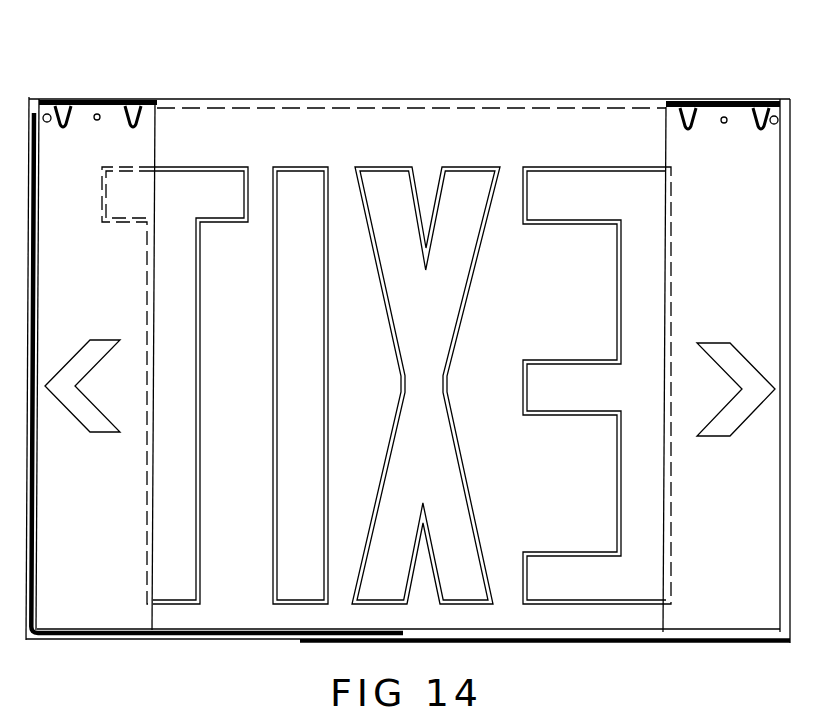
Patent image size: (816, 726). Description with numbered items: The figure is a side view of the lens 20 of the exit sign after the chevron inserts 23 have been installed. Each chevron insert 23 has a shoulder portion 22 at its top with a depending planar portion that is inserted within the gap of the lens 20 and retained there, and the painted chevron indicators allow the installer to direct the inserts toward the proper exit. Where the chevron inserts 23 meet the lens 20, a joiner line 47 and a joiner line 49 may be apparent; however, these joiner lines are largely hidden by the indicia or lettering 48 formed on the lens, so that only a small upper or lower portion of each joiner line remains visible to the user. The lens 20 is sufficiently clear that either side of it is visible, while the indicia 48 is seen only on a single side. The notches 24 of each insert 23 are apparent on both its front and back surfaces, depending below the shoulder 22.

The lens 20 is at (235, 614).
The shoulder portion 22 is at (143, 97).
The chevron inserts 23 is at (110, 601).
The notches 24 is at (62, 123).
The joiner line 47 is at (155, 150).
The indicia or lettering 48 is at (230, 197).
The joiner line 49 is at (666, 143).